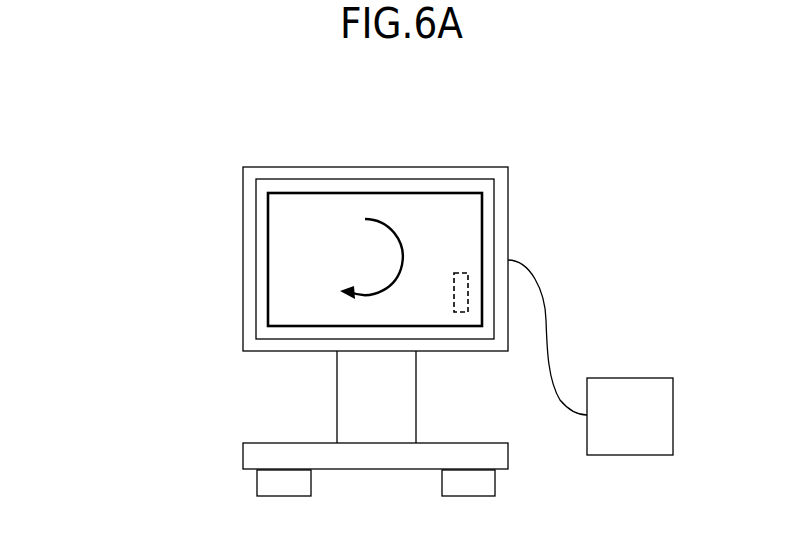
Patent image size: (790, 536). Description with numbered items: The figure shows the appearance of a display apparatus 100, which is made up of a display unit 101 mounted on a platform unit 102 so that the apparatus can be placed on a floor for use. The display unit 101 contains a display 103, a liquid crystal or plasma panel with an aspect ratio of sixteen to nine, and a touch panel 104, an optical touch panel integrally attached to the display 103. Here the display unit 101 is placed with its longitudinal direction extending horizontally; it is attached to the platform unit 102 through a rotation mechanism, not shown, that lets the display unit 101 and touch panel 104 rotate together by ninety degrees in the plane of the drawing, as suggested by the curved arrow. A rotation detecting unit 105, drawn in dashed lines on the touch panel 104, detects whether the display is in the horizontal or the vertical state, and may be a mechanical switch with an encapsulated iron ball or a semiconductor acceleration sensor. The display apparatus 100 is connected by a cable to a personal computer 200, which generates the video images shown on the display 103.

The display apparatus 100 is at (164, 151).
The display unit 101 is at (203, 160).
The platform unit 102 is at (203, 357).
The display 103 is at (309, 179).
The touch panel 104 is at (393, 193).
The rotation detecting unit 105 is at (461, 273).
The personal computer 200 is at (623, 378).